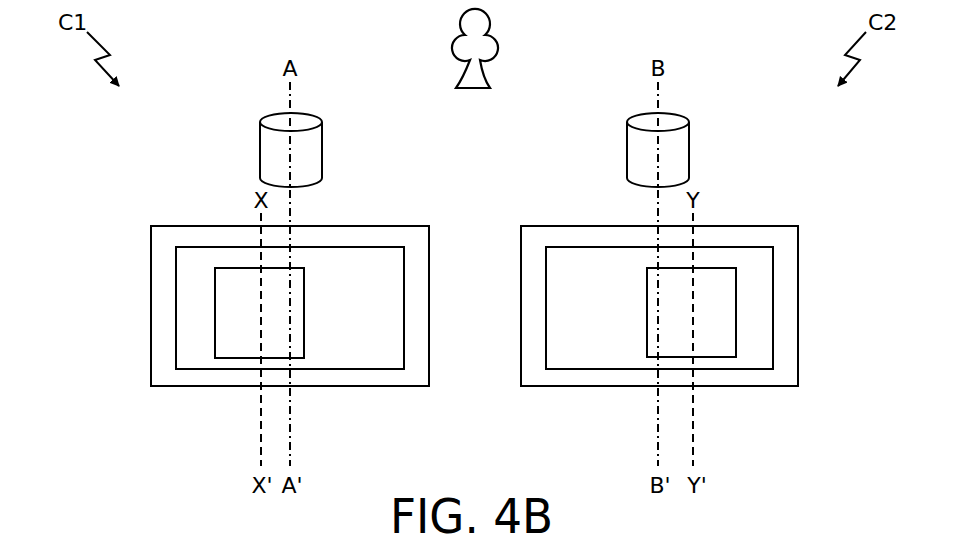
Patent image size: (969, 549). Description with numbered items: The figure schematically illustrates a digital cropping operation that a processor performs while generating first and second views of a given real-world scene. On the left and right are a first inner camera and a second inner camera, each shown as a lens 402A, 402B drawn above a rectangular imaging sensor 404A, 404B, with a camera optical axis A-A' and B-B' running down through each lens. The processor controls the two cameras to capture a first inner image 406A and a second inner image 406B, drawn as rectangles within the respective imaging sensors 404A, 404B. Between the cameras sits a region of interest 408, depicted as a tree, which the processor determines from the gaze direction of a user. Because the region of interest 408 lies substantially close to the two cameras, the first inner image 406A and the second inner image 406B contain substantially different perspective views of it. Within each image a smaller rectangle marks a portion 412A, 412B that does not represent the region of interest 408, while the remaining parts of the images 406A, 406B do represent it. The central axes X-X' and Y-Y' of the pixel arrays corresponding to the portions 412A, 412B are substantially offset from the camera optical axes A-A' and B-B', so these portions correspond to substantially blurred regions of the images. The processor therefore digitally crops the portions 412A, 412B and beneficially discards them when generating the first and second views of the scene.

The lens 402A is at (260, 156).
The lens 402B is at (689, 156).
The imaging sensor 404A is at (158, 311).
The imaging sensor 404B is at (790, 309).
The first inner image 406A is at (185, 337).
The second inner image 406B is at (763, 337).
The region of interest 408 is at (503, 43).
The portion 412A is at (242, 345).
The portion 412B is at (717, 345).